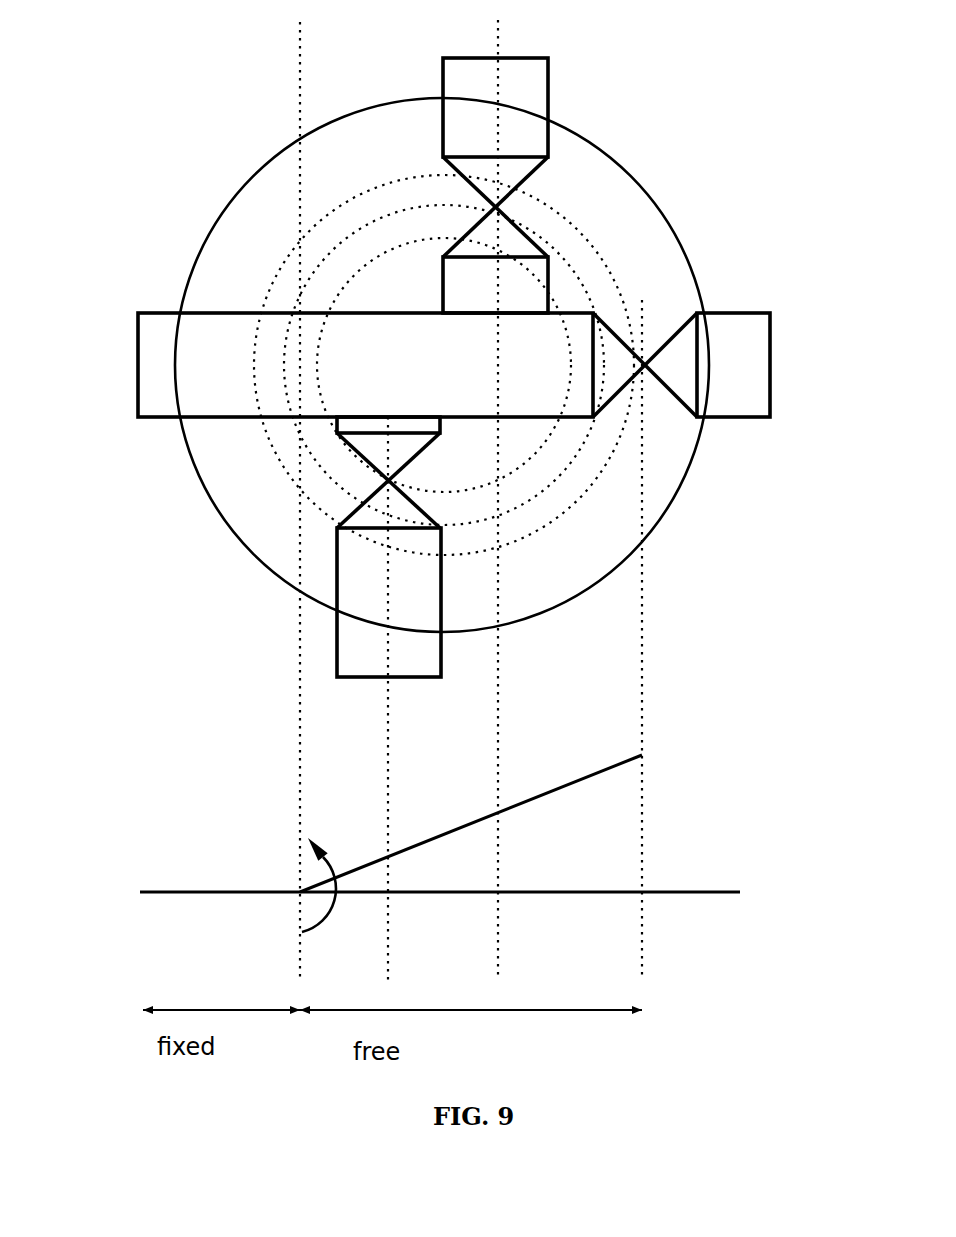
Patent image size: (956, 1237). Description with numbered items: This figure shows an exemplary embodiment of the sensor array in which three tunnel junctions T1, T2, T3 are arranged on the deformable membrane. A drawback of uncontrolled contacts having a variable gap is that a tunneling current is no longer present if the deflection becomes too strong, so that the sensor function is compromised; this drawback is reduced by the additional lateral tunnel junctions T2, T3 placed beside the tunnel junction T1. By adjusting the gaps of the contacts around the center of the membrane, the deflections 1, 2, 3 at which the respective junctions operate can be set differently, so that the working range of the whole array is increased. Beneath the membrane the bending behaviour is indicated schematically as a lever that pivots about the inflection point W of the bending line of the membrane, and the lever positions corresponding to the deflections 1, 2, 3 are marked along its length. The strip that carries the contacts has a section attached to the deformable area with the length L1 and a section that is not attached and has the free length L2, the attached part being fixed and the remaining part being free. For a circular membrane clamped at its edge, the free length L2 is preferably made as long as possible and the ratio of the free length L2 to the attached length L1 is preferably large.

The tunnel junction T1 is at (681, 369).
The lateral tunnel junction T2 is at (500, 185).
The lateral tunnel junction T3 is at (394, 547).
The deflection 1 is at (660, 640).
The deflection 2 is at (515, 500).
The deflection 3 is at (411, 698).
The inflection point W is at (302, 489).
The length of attached section L1 is at (221, 1038).
The free length L2 is at (471, 1039).